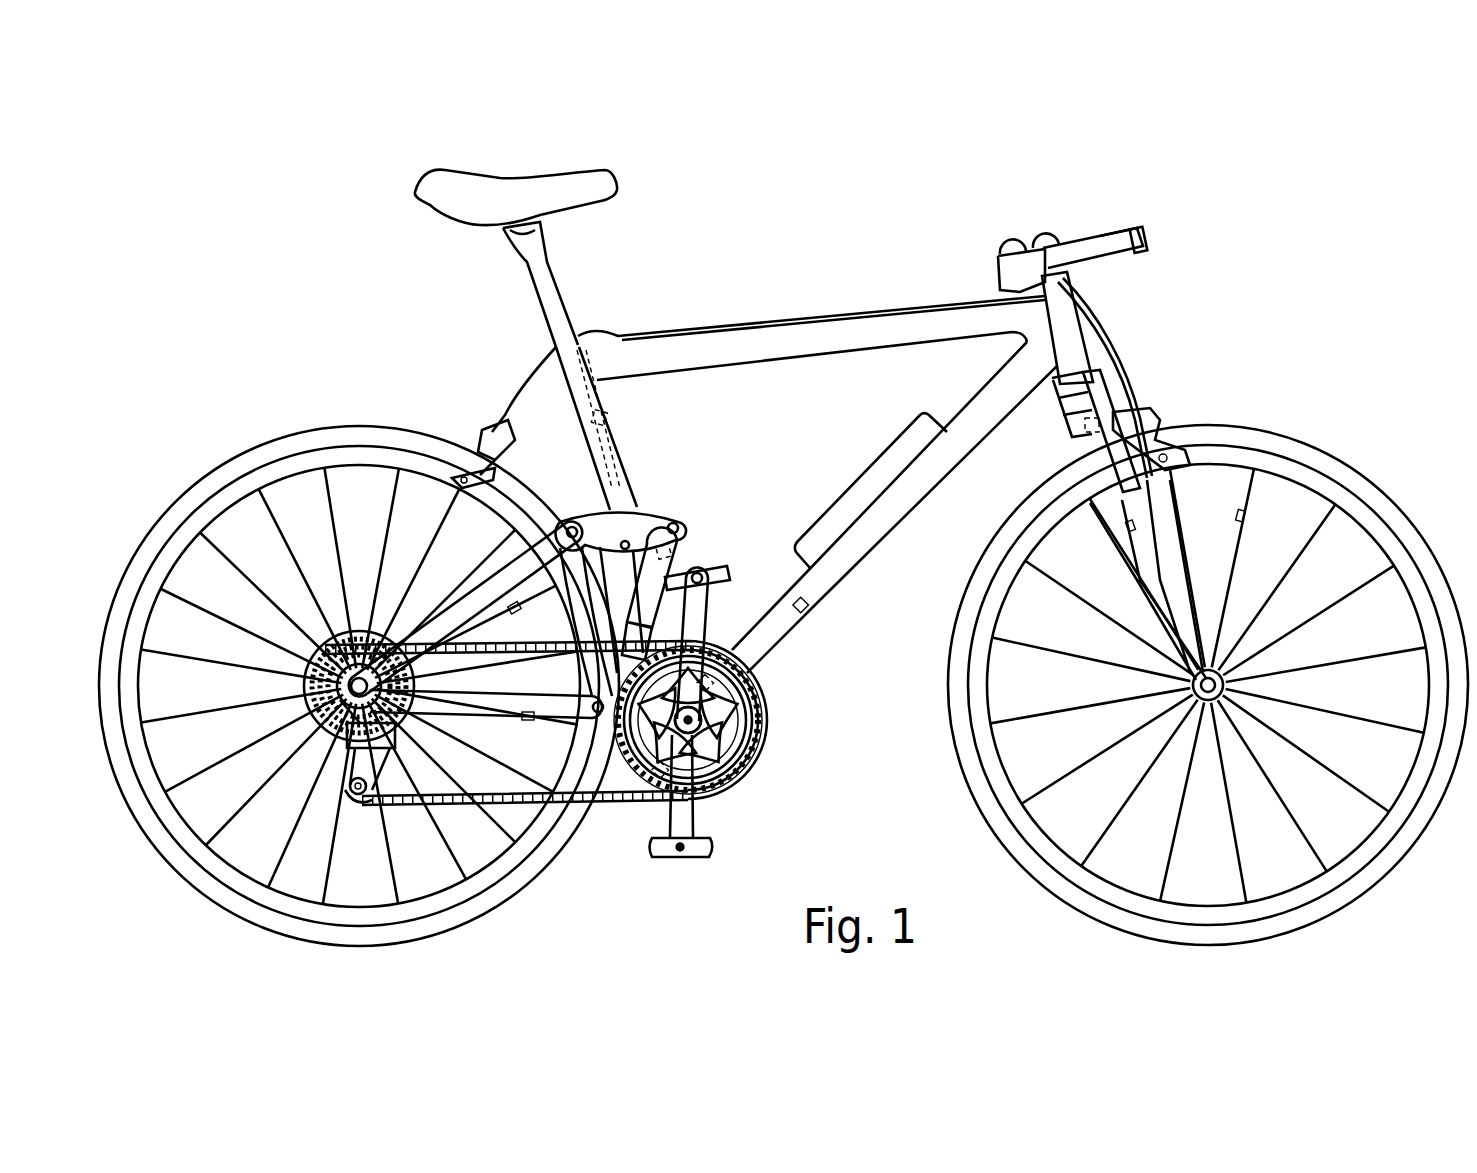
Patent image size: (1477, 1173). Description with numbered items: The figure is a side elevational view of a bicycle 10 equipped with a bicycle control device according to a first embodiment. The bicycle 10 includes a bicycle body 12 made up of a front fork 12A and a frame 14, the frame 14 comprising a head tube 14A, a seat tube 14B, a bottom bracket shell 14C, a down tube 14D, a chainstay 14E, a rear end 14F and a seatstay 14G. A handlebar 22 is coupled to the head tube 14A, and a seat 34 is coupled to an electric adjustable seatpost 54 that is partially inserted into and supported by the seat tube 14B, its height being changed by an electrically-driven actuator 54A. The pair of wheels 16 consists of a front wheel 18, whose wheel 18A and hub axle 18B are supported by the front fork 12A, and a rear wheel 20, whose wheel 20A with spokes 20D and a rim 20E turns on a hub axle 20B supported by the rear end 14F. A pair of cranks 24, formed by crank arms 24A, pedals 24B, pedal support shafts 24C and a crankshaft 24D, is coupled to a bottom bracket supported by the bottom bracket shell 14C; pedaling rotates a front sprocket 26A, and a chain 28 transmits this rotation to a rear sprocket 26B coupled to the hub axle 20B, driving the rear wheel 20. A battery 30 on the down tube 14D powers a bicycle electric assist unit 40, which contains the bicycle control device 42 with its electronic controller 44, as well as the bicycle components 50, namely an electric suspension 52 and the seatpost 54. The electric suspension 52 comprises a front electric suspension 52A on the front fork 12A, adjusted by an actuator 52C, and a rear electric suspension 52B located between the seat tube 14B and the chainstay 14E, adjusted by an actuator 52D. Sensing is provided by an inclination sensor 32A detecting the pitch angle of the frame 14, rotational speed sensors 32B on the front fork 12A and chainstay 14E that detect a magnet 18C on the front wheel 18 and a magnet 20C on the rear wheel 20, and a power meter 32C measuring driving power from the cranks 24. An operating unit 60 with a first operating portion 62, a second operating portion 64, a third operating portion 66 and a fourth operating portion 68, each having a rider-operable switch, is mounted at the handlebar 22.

The bicycle 10 is at (1261, 135).
The bicycle body 12 is at (766, 513).
The front fork 12A is at (1110, 380).
The frame 14 is at (1181, 314).
The head tube 14A is at (1060, 345).
The seat tube 14B is at (610, 456).
The bottom bracket shell 14C is at (770, 650).
The down tube 14D is at (888, 520).
The chainstay 14E is at (445, 694).
The rear end 14F is at (342, 636).
The seatstay 14G is at (427, 593).
The wheels 16 is at (787, 656).
The front wheel 18 is at (1393, 402).
The wheel 18A is at (1320, 482).
The hub axle 18B is at (1226, 688).
The magnet 18C is at (1245, 525).
The rear wheel 20 is at (146, 428).
The wheel 20A is at (178, 537).
The hub axle 20B is at (308, 662).
The magnet 20C is at (515, 613).
The spokes 20D is at (278, 857).
The rim 20E is at (170, 820).
The handlebar 22 is at (1095, 243).
The cranks 24 is at (705, 600).
The crank arms 24A is at (700, 795).
The pedals 24B is at (706, 860).
The pedal support shafts 24C is at (678, 852).
The crankshaft 24D is at (745, 770).
The front sprocket 26A is at (757, 755).
The rear sprocket 26B is at (300, 706).
The chain 28 is at (422, 808).
The battery 30 is at (870, 472).
The inclination sensor 32A is at (815, 612).
The rotational speed sensor 32B is at (525, 727).
The power meter 32C is at (632, 785).
The seat 34 is at (500, 177).
The bicycle electric assist unit 40 is at (760, 735).
The bicycle control device 42 is at (636, 633).
The electronic controller 44 is at (755, 700).
The bicycle components 50 is at (930, 451).
The electric suspension 52 is at (1258, 380).
The front electric suspension 52A is at (1160, 447).
The rear electric suspension 52B is at (660, 580).
The actuator 52C is at (1080, 433).
The actuator 52D is at (632, 540).
The electric adjustable seatpost 54 is at (556, 272).
The actuator 54A is at (607, 418).
The operating unit 60 is at (1077, 214).
The first operating portion 62 is at (1004, 248).
The second operating portion 64 is at (1148, 243).
The third operating portion 66 is at (1136, 232).
The fourth operating portion 68 is at (1045, 238).